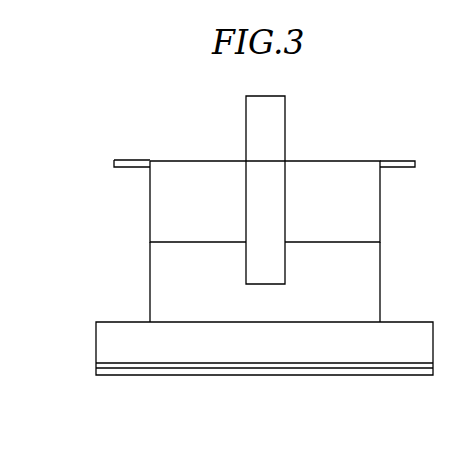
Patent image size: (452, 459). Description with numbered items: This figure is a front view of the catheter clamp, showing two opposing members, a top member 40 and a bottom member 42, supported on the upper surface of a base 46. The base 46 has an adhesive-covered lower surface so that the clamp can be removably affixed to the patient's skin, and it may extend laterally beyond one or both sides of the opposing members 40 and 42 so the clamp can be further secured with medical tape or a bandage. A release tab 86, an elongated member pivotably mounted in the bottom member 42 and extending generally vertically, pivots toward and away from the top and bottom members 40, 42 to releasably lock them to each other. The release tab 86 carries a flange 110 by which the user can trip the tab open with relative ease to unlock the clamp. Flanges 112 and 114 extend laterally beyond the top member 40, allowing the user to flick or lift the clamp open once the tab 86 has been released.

The top member 40 is at (365, 213).
The bottom member 42 is at (365, 280).
The base 46 is at (125, 337).
The release tab 86 is at (263, 183).
The flange 110 is at (270, 130).
The flange 112 is at (398, 159).
The flange 114 is at (130, 159).